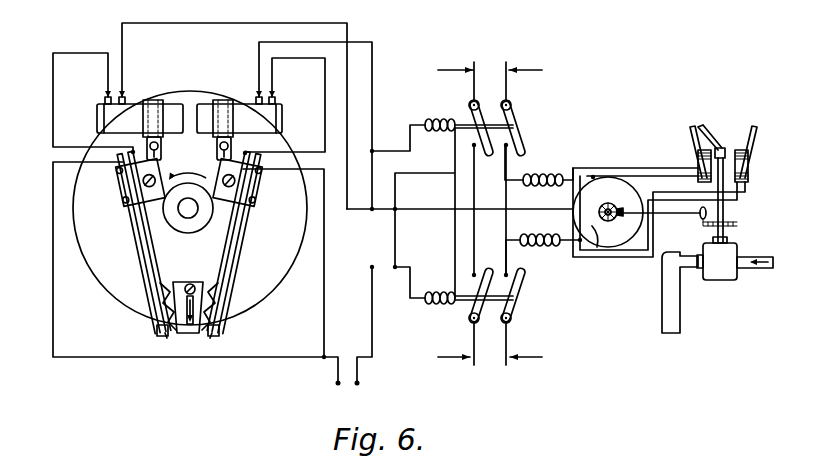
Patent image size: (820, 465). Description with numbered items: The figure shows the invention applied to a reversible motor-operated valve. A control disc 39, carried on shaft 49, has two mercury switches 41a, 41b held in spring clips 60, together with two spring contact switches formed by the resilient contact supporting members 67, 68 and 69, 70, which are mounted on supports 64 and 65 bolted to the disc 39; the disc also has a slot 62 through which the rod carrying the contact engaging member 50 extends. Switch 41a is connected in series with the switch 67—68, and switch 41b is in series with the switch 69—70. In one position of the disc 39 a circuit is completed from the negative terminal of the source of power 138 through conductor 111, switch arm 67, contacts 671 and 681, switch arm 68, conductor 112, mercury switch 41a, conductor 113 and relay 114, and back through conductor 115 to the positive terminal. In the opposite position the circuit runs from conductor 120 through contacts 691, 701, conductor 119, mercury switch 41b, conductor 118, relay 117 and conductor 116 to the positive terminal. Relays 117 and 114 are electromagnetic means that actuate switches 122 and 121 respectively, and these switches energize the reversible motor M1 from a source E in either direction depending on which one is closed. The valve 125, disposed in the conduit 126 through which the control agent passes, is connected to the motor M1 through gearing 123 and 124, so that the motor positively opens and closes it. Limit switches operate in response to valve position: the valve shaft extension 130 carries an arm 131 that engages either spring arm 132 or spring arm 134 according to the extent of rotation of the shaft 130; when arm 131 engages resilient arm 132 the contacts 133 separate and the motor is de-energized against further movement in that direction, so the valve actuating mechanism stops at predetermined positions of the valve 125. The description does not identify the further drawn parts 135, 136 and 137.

The conductor 112 is at (53, 66).
The conductor 113 is at (240, 23).
The mercury switch 41a is at (110, 113).
The mercury switch 41b is at (240, 110).
The spring clips 60 is at (218, 110).
The conductor 118 is at (373, 53).
The conductor 119 is at (325, 90).
The relay 117 is at (432, 118).
The conductor 116 is at (413, 175).
The conductor 111 is at (107, 357).
The conductor 120 is at (325, 255).
The conductor 115 is at (372, 323).
The source of power 138 is at (345, 386).
The relay 114 is at (433, 308).
The switch 122 is at (513, 130).
The switch 121 is at (512, 305).
The source E is at (490, 207).
The conductor 137 is at (593, 175).
The gearing 123 is at (618, 253).
The reversible motor M1 is at (580, 243).
The motor brush 136 is at (593, 253).
The gearing 124 is at (722, 217).
The arm 131 is at (708, 128).
The valve shaft extension 130 is at (727, 150).
The spring arm 132 is at (690, 135).
The spring arm 134 is at (753, 137).
The contacts 133 is at (698, 157).
The contact block 135 is at (748, 160).
The valve 125 is at (727, 281).
The conduit 126 is at (667, 325).
The control disc 39 is at (98, 237).
The shaft 49 is at (178, 207).
The support 64 is at (156, 163).
The support 65 is at (257, 198).
The switch arm 67 is at (140, 250).
The switch arm 68 is at (161, 250).
The switch arm 69 is at (226, 250).
The switch arm 70 is at (239, 249).
The slot 62 is at (215, 288).
The contact engaging member 50 is at (182, 335).
The contact 671 is at (160, 337).
The contact 681 is at (167, 335).
The contact 691 is at (210, 337).
The contact 701 is at (217, 337).